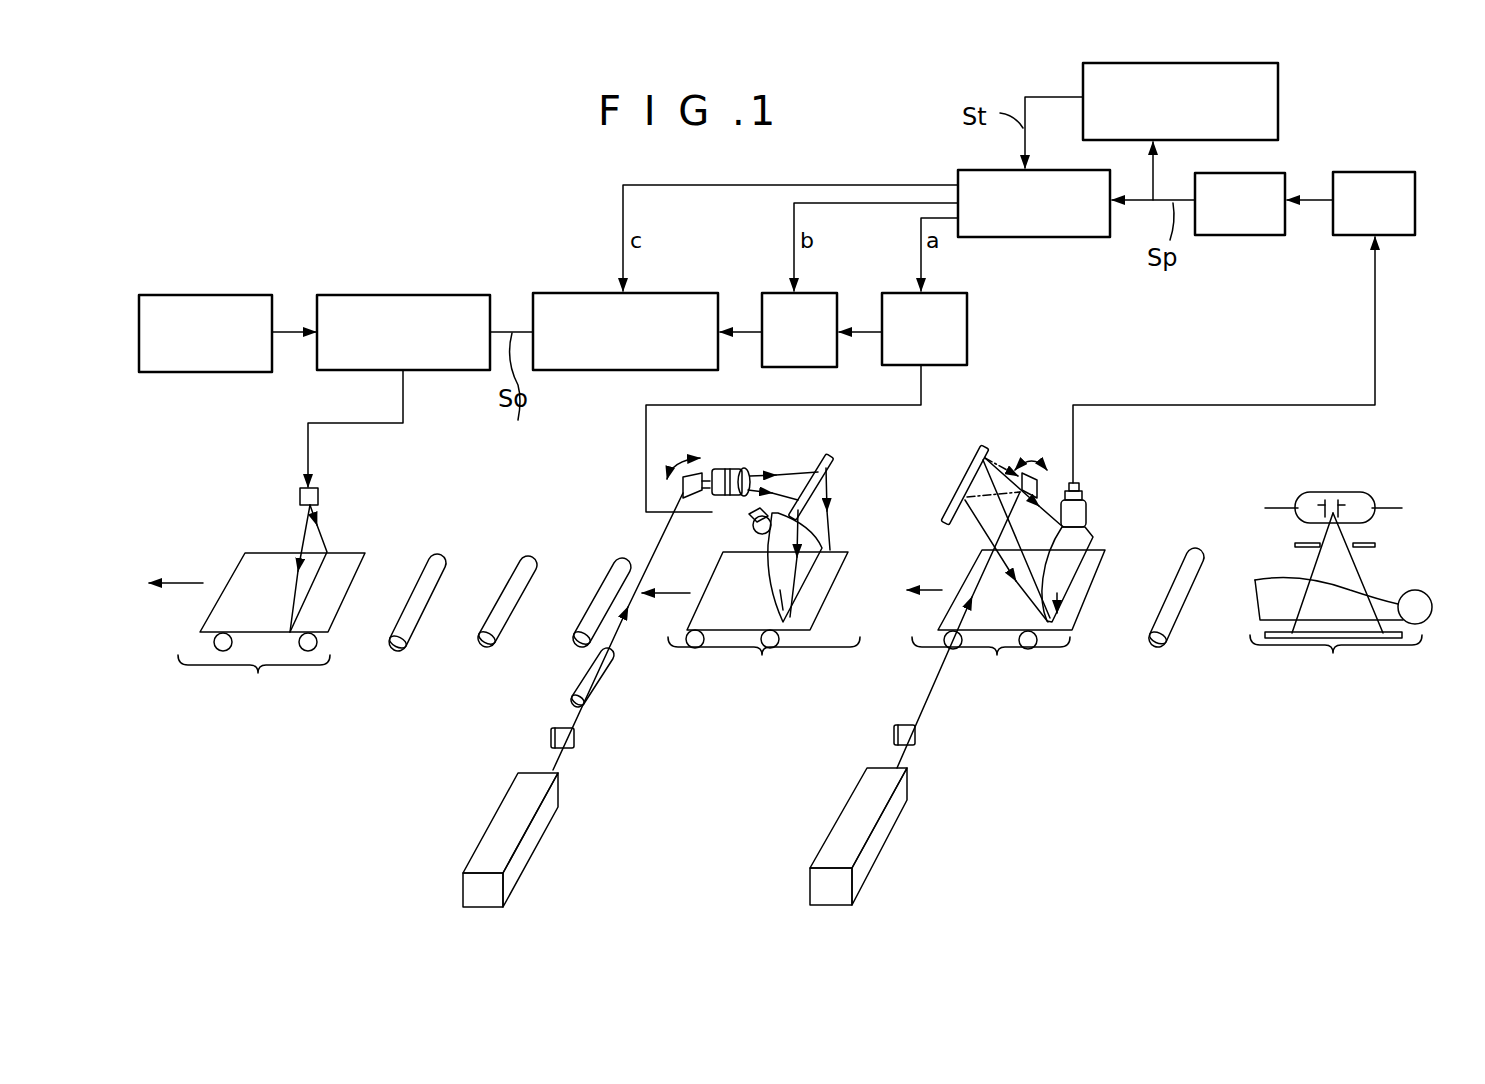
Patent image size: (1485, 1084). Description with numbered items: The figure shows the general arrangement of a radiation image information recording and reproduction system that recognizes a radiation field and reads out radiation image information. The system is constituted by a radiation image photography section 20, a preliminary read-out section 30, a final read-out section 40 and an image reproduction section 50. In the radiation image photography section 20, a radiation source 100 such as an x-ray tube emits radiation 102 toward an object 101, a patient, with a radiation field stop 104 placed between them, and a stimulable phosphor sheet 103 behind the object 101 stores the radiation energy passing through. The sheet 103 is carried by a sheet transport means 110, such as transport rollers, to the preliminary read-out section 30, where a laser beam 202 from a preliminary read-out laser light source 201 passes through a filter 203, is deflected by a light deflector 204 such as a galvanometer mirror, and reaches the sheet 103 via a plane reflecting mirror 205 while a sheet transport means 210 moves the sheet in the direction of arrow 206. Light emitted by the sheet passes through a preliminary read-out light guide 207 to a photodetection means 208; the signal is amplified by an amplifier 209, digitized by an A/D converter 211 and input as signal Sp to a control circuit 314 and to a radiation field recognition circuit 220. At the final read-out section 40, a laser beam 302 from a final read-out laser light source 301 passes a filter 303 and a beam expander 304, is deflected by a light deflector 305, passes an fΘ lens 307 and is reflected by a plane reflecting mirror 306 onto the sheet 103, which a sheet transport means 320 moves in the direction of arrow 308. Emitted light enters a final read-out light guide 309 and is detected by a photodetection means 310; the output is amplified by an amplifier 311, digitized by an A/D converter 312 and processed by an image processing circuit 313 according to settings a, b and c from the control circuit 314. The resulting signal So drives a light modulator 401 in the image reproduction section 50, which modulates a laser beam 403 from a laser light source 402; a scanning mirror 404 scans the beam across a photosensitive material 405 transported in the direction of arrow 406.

The laser light source 402 is at (228, 295).
The light modulator 401 is at (420, 294).
The laser beam 403 is at (287, 333).
The image processing circuit 313 is at (568, 293).
The A/D converter 312 is at (770, 293).
The amplifier 311 is at (883, 293).
The control circuit 314 is at (1073, 238).
The radiation field recognition circuit 220 is at (1280, 118).
The A/D converter 211 is at (1260, 237).
The amplifier 209 is at (1353, 237).
The image reproduction section 50 is at (254, 678).
The scanning mirror 404 is at (318, 499).
The photosensitive material 405 is at (267, 565).
The arrow 406 is at (183, 583).
The sheet transport means 320 is at (777, 641).
The final read-out section 40 is at (764, 668).
The stimulable phosphor sheet 103 is at (835, 573).
The final read-out laser light source 301 is at (540, 833).
The laser beam 302 is at (553, 757).
The filter 303 is at (575, 734).
The beam expander 304 is at (607, 677).
The arrow 308 is at (680, 593).
The light deflector 305 is at (702, 475).
The fΘ lens 307 is at (745, 468).
The plane reflecting mirror 306 is at (830, 457).
The final read-out light guide 309 is at (802, 550).
The photodetection means 310 is at (748, 528).
The preliminary read-out laser light source 201 is at (878, 842).
The laser beam 202 is at (898, 755).
The filter 203 is at (917, 733).
The light deflector 204 is at (1040, 487).
The plane reflecting mirror 205 is at (978, 437).
The arrow 206 is at (932, 590).
The preliminary read-out light guide 207 is at (1080, 543).
The photodetection means 208 is at (1083, 507).
The sheet transport means 210 is at (1033, 648).
The preliminary read-out section 30 is at (991, 665).
The sheet transport means 110 is at (1163, 651).
The radiation image photography section 20 is at (1336, 665).
The radiation source 100 is at (1343, 490).
The radiation field stop 104 is at (1377, 543).
The radiation 102 is at (1320, 562).
The object 101 is at (1333, 597).